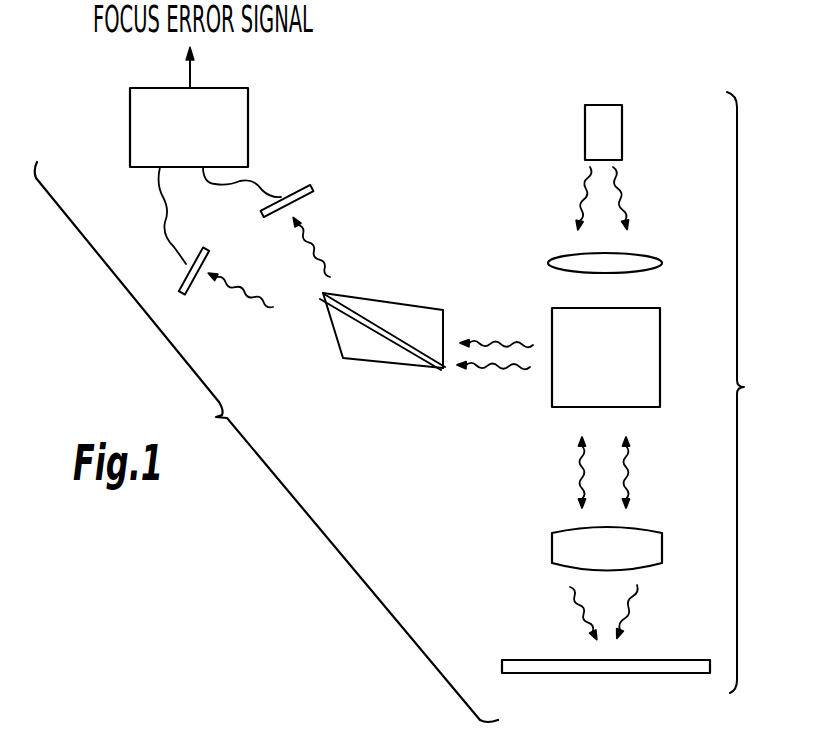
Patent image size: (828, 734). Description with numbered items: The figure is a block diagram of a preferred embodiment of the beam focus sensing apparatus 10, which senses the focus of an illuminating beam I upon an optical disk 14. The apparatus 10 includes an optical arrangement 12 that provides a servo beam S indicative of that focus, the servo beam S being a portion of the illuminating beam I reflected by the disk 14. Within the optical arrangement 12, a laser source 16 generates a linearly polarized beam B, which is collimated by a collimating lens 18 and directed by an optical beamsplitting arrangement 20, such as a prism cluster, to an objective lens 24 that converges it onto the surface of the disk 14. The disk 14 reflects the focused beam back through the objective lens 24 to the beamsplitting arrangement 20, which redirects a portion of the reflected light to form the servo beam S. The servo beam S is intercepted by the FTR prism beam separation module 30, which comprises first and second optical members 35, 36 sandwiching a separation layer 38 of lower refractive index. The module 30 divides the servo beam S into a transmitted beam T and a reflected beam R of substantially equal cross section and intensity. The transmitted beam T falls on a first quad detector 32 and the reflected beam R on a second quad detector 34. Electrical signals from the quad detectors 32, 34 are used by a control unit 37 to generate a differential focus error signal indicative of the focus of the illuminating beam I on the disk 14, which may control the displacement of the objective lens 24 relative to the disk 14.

The beam focus sensing apparatus 10 is at (638, 72).
The optical arrangement 12 is at (750, 392).
The optical disk 14 is at (710, 662).
The laser source 16 is at (620, 105).
The collimating lens 18 is at (658, 260).
The optical beamsplitting arrangement 20 is at (660, 340).
The objective lens 24 is at (662, 533).
The FTR prism beam separation module 30 is at (395, 375).
The first quad detector 32 is at (180, 294).
The second quad detector 34 is at (313, 190).
The first optical member 35 is at (352, 350).
The second optical member 36 is at (415, 312).
The control unit 37 is at (240, 88).
The separation layer 38 is at (388, 412).
The linearly polarized beam B is at (618, 193).
The servo beam S is at (513, 342).
The reflected beam R is at (333, 262).
The transmitted beam T is at (273, 307).
The illuminating beam I is at (632, 608).